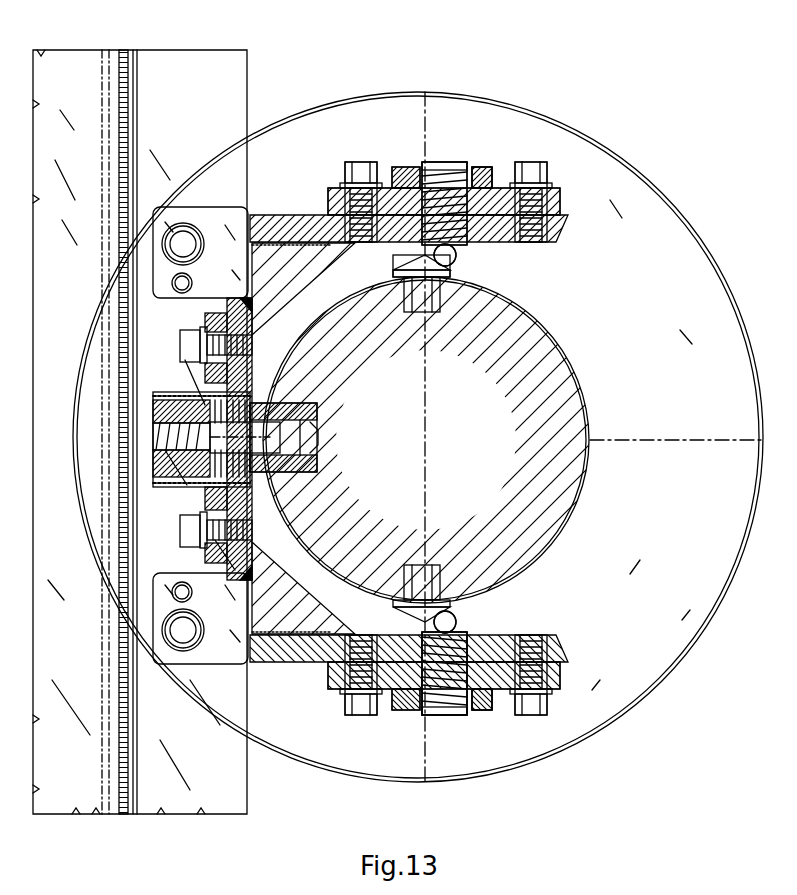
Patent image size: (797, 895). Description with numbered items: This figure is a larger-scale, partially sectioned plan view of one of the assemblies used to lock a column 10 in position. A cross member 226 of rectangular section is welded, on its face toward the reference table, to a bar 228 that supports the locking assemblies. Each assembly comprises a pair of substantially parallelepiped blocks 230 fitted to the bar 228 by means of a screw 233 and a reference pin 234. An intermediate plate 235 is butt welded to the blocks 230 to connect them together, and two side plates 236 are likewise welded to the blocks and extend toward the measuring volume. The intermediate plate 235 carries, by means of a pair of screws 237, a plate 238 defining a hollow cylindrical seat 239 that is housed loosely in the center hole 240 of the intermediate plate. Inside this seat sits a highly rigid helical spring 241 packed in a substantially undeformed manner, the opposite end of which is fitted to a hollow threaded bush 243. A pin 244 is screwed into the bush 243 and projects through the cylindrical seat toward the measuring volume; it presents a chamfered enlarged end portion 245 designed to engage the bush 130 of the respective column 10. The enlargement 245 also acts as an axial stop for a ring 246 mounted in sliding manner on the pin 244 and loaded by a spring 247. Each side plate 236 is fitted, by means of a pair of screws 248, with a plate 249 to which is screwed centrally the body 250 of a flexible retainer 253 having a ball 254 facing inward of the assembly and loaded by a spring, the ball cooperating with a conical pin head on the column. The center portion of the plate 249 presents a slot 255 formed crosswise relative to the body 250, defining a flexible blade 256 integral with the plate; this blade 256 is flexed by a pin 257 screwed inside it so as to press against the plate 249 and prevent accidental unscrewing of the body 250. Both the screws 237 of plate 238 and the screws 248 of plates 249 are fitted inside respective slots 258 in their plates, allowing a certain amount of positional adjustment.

The column 10 is at (648, 148).
The bush 130 is at (272, 410).
The cross member 226 is at (80, 90).
The bar 228 is at (186, 82).
The block 230 is at (212, 232).
The screw 233 is at (182, 246).
The reference pin 234 is at (180, 284).
The intermediate plate 235 is at (232, 294).
The side plate 236 is at (295, 225).
The screw 237 is at (190, 330).
The plate 238 is at (200, 497).
The hollow cylindrical seat 239 is at (187, 385).
The center hole 240 is at (200, 383).
The helical spring 241 is at (258, 487).
The hollow threaded bush 243 is at (155, 460).
The pin 244 is at (160, 428).
The chamfered enlarged end portion 245 is at (290, 440).
The ring 246 is at (257, 395).
The spring 247 is at (190, 490).
The screw 248 is at (358, 163).
The plate 249 is at (402, 170).
The body 250 is at (478, 720).
The flexible retainer 253 is at (458, 258).
The ball 254 is at (422, 254).
The slot 255 is at (440, 168).
The flexible blade 256 is at (484, 186).
The pin 257 is at (490, 166).
The slot 258 is at (335, 200).